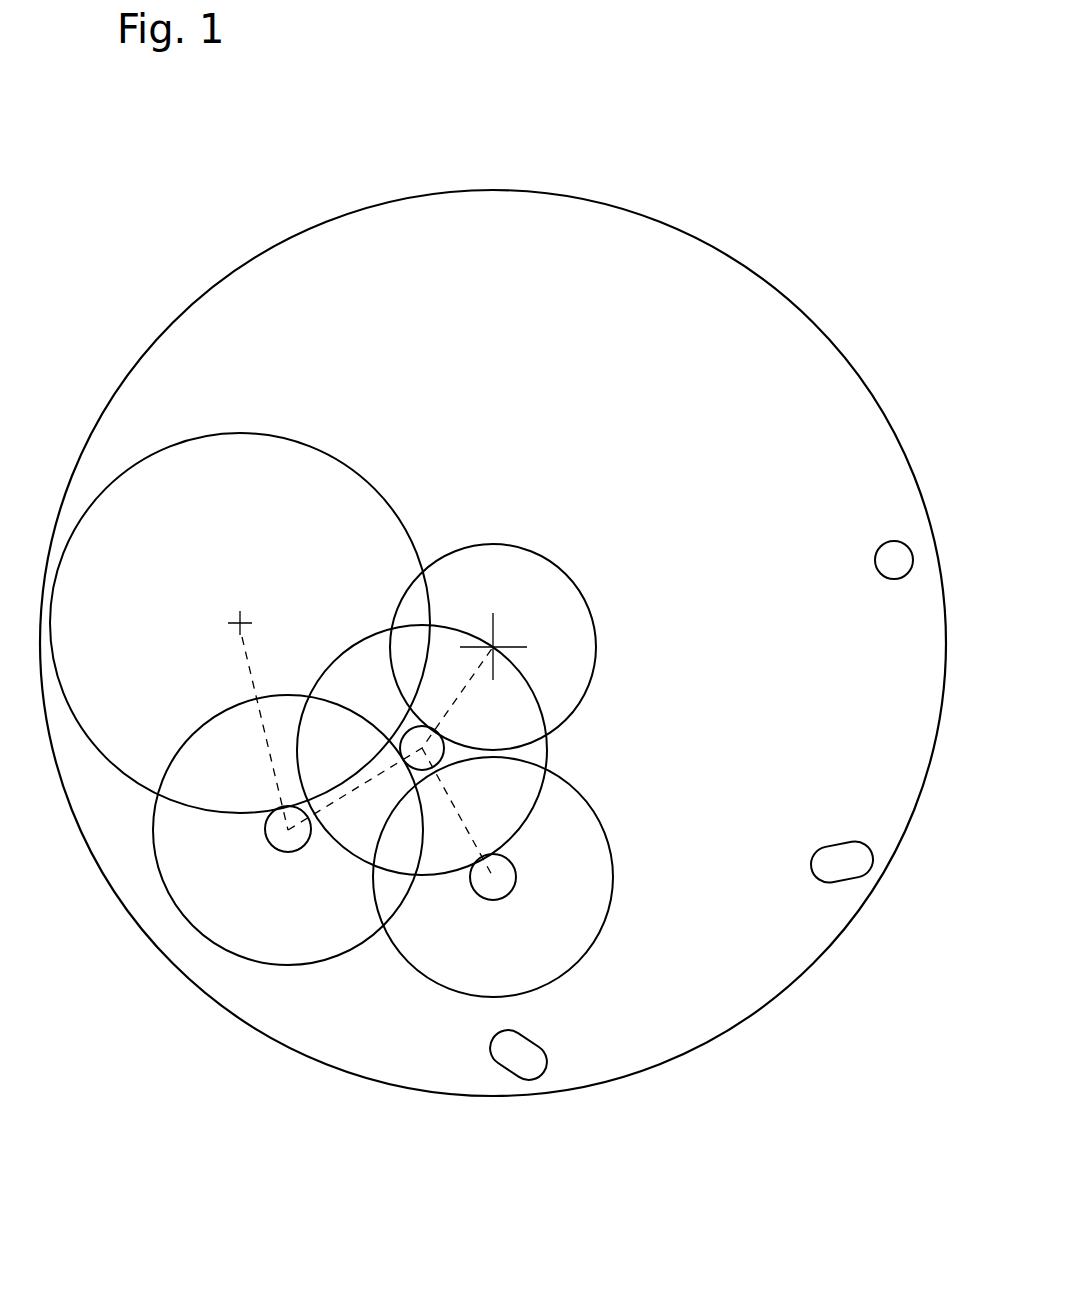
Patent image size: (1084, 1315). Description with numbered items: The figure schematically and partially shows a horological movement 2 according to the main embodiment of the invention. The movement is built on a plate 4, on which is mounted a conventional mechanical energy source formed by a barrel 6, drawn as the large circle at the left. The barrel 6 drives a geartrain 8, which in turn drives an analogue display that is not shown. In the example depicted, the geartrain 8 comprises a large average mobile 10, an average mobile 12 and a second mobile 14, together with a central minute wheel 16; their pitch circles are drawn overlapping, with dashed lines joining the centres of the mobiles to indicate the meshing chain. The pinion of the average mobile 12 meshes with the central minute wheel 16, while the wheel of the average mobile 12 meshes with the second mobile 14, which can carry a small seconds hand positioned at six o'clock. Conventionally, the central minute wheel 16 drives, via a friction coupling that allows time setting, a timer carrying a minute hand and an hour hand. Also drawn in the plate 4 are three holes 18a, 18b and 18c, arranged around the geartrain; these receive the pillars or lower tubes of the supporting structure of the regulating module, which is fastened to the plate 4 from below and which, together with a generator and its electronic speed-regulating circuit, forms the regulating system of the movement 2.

The horological movement 2 is at (655, 178).
The plate 4 is at (723, 298).
The barrel 6 is at (133, 510).
The geartrain 8 is at (372, 972).
The large average mobile 10 is at (222, 948).
The average mobile 12 is at (357, 645).
The second mobile 14 is at (440, 987).
The central minute wheel 16 is at (515, 545).
The hole of the plate 18a is at (877, 551).
The hole of the plate 18b is at (838, 843).
The hole of the plate 18c is at (523, 1080).